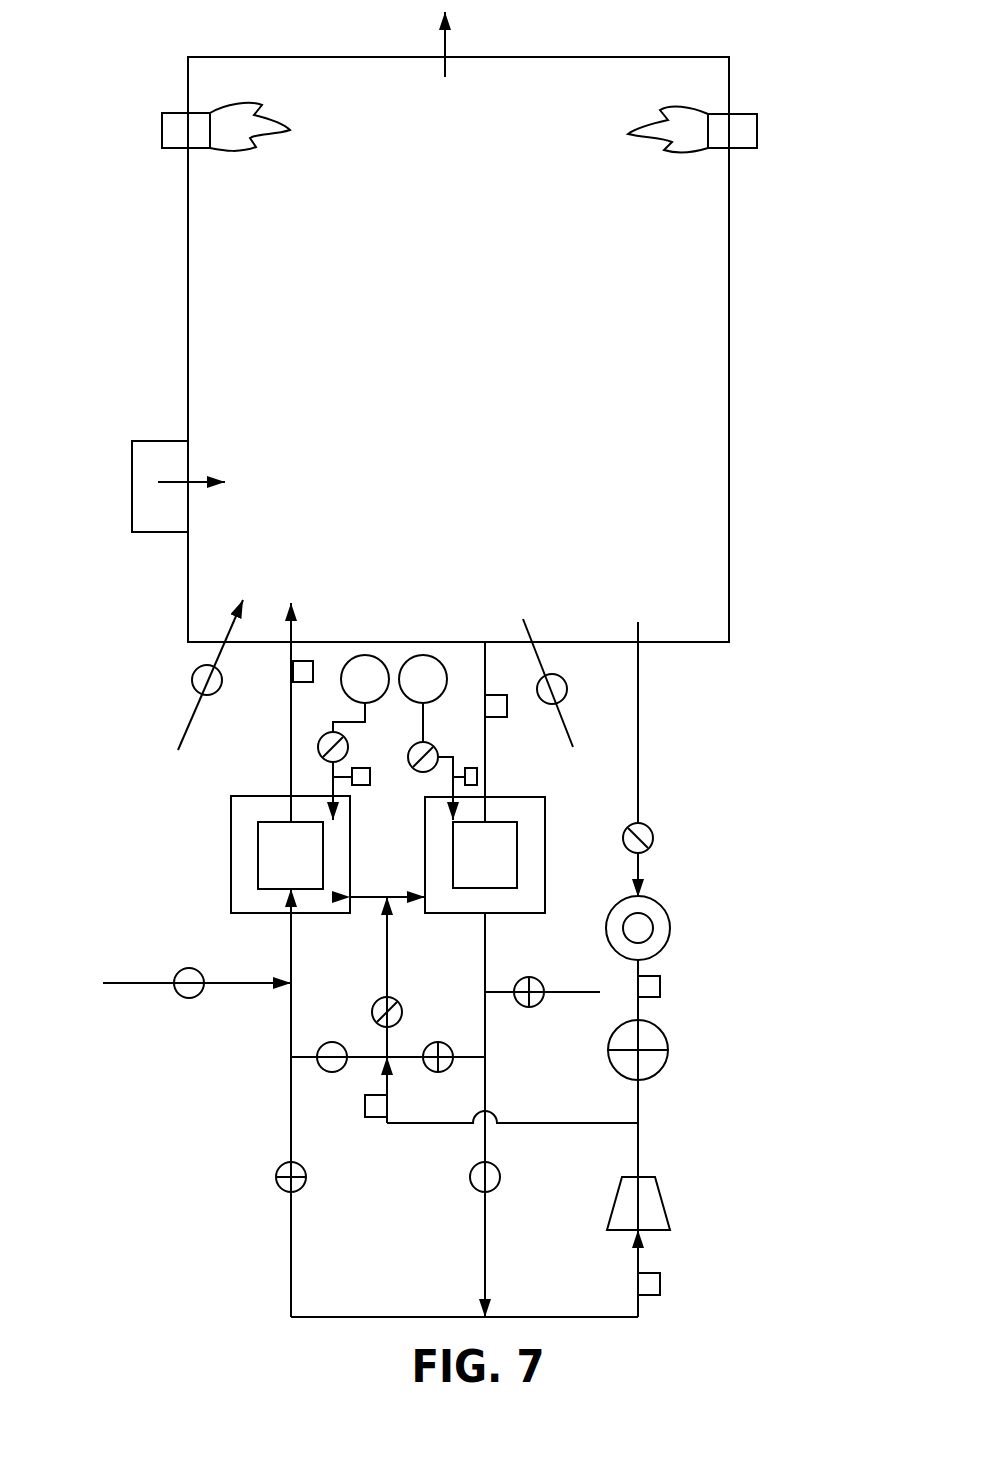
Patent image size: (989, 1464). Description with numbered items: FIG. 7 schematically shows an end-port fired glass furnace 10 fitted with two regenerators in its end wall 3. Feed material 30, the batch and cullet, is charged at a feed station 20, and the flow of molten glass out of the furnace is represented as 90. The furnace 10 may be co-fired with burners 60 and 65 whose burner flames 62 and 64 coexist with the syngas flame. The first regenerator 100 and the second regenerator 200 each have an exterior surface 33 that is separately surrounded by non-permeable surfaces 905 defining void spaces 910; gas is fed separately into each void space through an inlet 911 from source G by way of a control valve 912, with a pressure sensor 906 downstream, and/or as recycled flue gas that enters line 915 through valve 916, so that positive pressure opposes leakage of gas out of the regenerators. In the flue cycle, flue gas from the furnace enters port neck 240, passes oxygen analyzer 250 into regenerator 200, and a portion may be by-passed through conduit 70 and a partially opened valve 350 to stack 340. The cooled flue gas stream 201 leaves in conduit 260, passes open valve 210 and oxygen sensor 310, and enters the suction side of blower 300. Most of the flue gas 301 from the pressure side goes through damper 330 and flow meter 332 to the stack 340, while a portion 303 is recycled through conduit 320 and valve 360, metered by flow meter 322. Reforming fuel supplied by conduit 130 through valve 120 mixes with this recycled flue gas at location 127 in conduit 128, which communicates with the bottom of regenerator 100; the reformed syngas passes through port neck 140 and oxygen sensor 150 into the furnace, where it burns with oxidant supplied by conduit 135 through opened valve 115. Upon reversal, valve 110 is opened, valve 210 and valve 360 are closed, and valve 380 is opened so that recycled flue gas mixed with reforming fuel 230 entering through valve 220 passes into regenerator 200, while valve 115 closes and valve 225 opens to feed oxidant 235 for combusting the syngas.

The end wall 3 is at (690, 641).
The glass furnace 10 is at (360, 228).
The feed station 20 is at (150, 473).
The feed material 30 is at (188, 469).
The exterior surface 33 is at (323, 873).
The burner 60 is at (174, 118).
The burner flame 62 is at (252, 120).
The burner flame 64 is at (668, 115).
The burner 65 is at (749, 131).
The conduit 70 is at (638, 727).
The molten glass flow 90 is at (462, 44).
The first regenerator 100 is at (278, 856).
The valve 110 is at (270, 1177).
The valve 115 is at (188, 680).
The valve 120 is at (189, 972).
The mixing location 127 is at (291, 983).
The conduit 128 is at (291, 950).
The reforming fuel conduit 130 is at (195, 969).
The oxidant conduit 135 is at (193, 675).
The port neck 140 is at (271, 712).
The oxygen sensor 150 is at (311, 684).
The second regenerator 200 is at (471, 856).
The cooled flue gas stream 201 is at (465, 1115).
The valve 210 is at (505, 1177).
The valve 220 is at (542, 979).
The valve 225 is at (561, 677).
The reforming fuel 230 is at (573, 979).
The oxidant 235 is at (567, 683).
The port neck 240 is at (504, 732).
The oxygen analyzer 250 is at (504, 718).
The conduit 260 is at (485, 1080).
The blower 300 is at (650, 1200).
The flue gas 301 is at (638, 1110).
The recycled flue gas portion 303 is at (416, 1090).
The oxygen sensor 310 is at (669, 1273).
The conduit 320 is at (512, 1131).
The flow meter 322 is at (355, 1105).
The damper 330 is at (659, 1050).
The flow meter 332 is at (670, 987).
The stack 340 is at (656, 926).
The valve 350 is at (659, 838).
The valve 360 is at (388, 1044).
The valve 380 is at (438, 1044).
The surfaces 905 is at (231, 850).
The pressure sensor 906 is at (470, 749).
The void space 910 is at (238, 819).
The inlet 911 is at (333, 792).
The control valve 912 is at (345, 757).
The line 915 is at (388, 955).
The valve 916 is at (397, 1004).